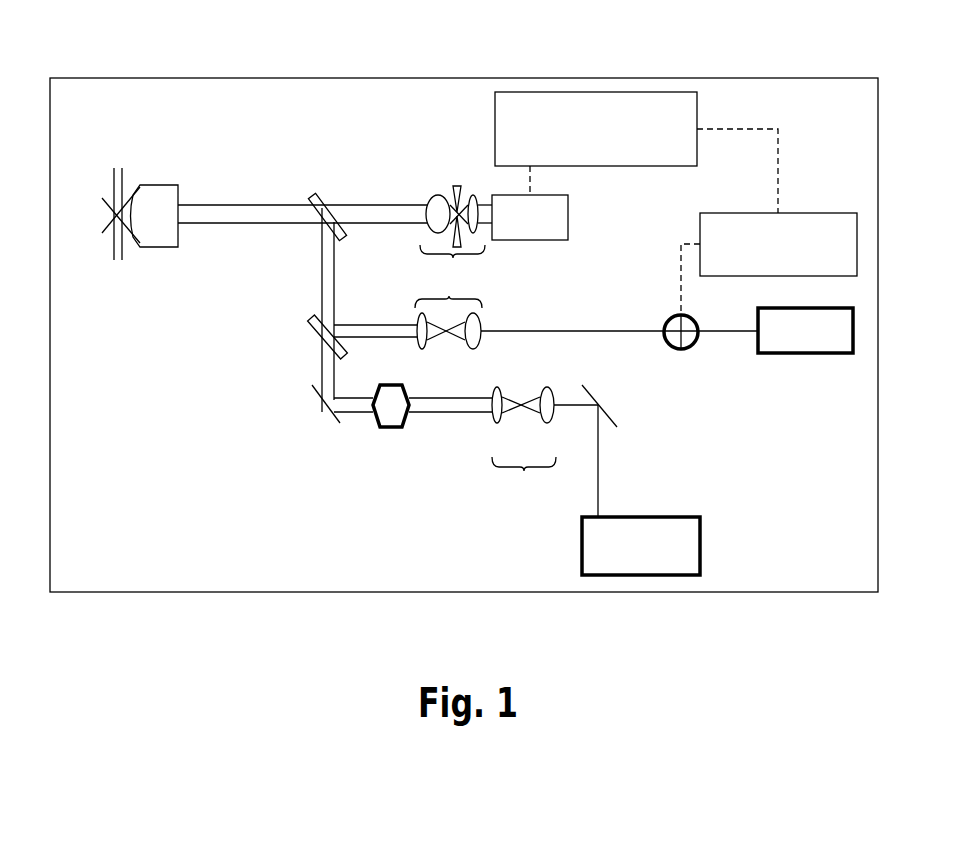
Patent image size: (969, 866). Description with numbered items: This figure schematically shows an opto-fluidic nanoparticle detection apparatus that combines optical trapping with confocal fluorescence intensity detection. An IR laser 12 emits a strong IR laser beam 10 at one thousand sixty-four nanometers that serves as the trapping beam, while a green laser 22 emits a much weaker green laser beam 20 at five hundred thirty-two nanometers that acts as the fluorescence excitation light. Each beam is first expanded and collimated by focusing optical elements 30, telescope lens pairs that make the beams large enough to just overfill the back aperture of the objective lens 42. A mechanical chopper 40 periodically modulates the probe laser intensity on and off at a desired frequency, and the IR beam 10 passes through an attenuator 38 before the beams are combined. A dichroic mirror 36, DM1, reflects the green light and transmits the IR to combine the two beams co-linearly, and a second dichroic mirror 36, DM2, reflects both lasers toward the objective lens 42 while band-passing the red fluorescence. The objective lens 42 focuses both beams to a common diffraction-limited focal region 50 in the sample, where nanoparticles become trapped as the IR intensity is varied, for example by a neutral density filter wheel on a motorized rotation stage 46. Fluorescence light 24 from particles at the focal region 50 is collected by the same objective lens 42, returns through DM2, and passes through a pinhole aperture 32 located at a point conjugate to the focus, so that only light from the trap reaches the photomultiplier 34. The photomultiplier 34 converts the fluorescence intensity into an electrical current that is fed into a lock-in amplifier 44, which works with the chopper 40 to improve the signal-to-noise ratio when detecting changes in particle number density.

The IR laser beam 10 is at (598, 475).
The IR laser 12 is at (700, 546).
The green laser beam 20 is at (543, 327).
The green laser 22 is at (810, 353).
The fluorescence light 24 is at (397, 203).
The focusing optical elements 30 is at (453, 258).
The pinhole aperture 32 is at (457, 186).
The photomultiplier 34 is at (570, 223).
The dichroic mirror 36 is at (306, 195).
The attenuator 38 is at (375, 418).
The mechanical chopper 40 is at (666, 318).
The objective lens 42 is at (178, 248).
The lock-in amplifier 44 is at (602, 92).
The motorized rotation stage 46 is at (114, 168).
The focal region 50 is at (112, 214).